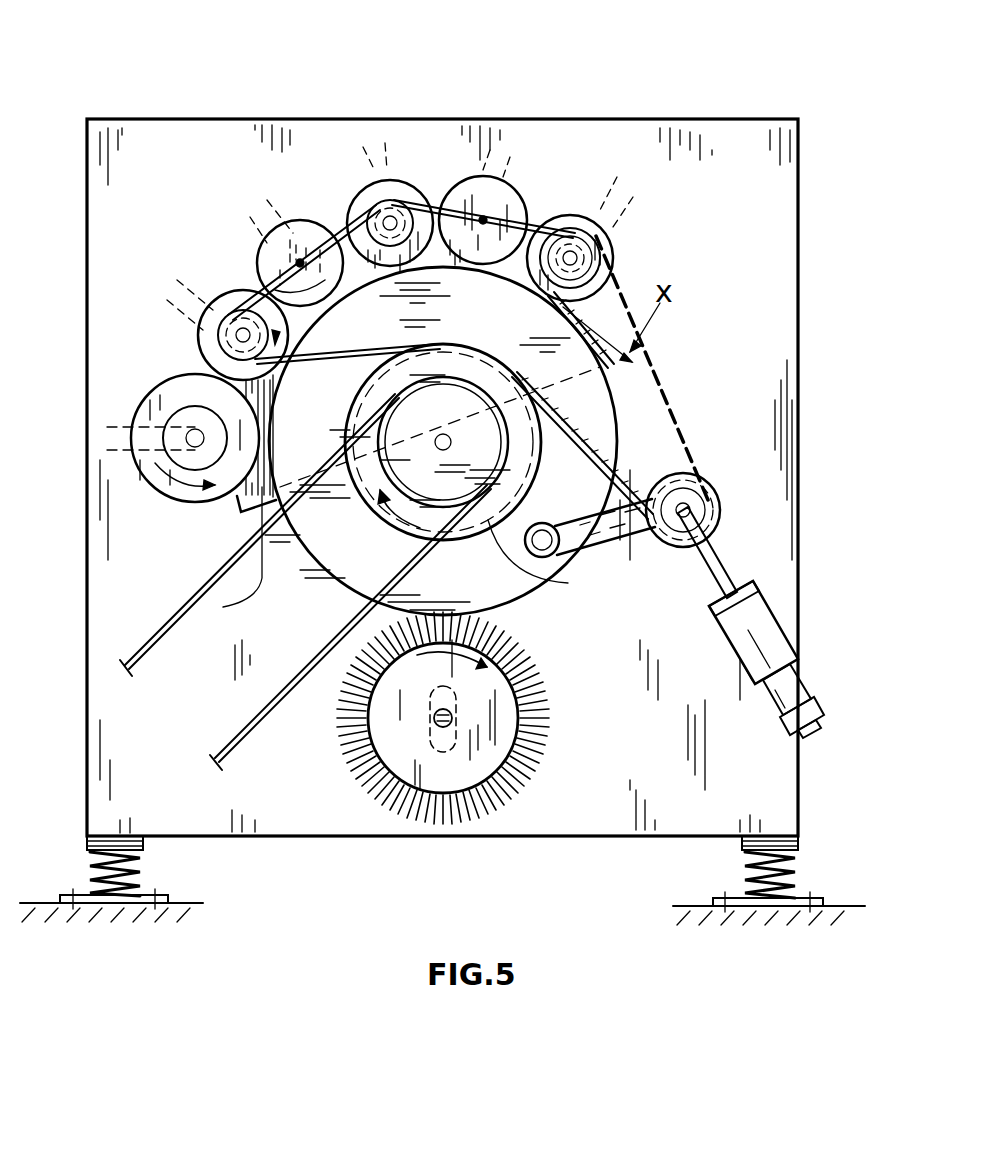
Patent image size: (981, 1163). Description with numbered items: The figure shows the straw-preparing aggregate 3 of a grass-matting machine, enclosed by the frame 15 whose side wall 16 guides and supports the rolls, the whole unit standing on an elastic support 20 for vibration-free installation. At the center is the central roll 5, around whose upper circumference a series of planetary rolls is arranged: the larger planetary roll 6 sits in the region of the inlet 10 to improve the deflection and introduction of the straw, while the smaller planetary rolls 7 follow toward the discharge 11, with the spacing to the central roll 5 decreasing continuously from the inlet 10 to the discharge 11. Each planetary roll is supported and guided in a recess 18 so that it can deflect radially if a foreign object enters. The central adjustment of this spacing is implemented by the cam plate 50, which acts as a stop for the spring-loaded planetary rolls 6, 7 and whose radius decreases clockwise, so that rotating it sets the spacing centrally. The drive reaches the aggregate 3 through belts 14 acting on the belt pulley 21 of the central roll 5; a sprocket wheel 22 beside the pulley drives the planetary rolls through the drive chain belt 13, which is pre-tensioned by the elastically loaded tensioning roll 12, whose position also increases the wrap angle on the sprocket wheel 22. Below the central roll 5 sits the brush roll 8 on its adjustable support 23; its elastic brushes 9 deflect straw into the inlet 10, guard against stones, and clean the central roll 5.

The aggregate 3 is at (150, 104).
The central roll 5 is at (357, 567).
The planetary roll 6 is at (133, 415).
The planetary rolls 7 is at (198, 335).
The brush roll 8 is at (403, 768).
The brushes 9 is at (527, 767).
The inlet 10 is at (215, 518).
The discharge 11 is at (680, 397).
The tensioning roll 12 is at (720, 532).
The drive chain belt 13 is at (653, 360).
The belts 14 is at (143, 643).
The frame 15 is at (676, 120).
The side wall 16 is at (738, 143).
The recess 18 is at (376, 182).
The elastic support 20 is at (135, 907).
The belt pulley 21 is at (490, 468).
The sprocket wheel 22 is at (537, 583).
The support 23 is at (437, 726).
The cam plate 50 is at (549, 220).